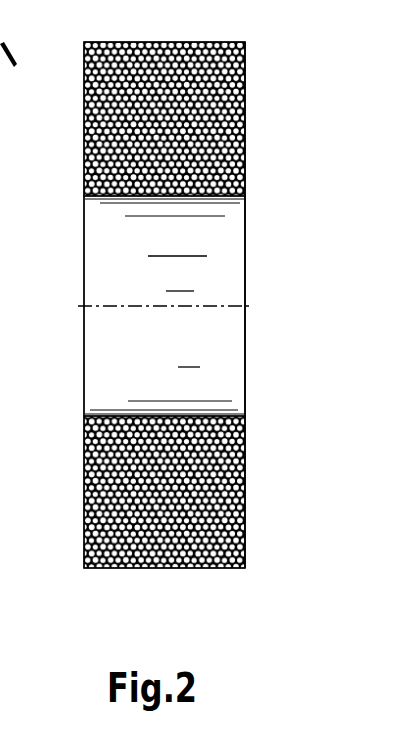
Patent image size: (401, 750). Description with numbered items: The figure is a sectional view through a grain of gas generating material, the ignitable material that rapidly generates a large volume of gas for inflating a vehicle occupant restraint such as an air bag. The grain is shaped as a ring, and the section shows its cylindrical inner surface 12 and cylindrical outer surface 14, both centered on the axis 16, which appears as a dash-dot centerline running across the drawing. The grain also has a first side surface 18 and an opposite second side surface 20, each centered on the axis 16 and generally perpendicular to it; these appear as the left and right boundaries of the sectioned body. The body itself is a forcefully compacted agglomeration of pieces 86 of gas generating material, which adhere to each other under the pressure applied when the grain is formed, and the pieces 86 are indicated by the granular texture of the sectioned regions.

The cylindrical inner surface 12 is at (134, 194).
The cylindrical outer surface 14 is at (152, 43).
The axis 16 is at (132, 305).
The first side surface 18 is at (84, 129).
The second side surface 20 is at (246, 73).
The pieces of gas generating material 86 is at (85, 143).